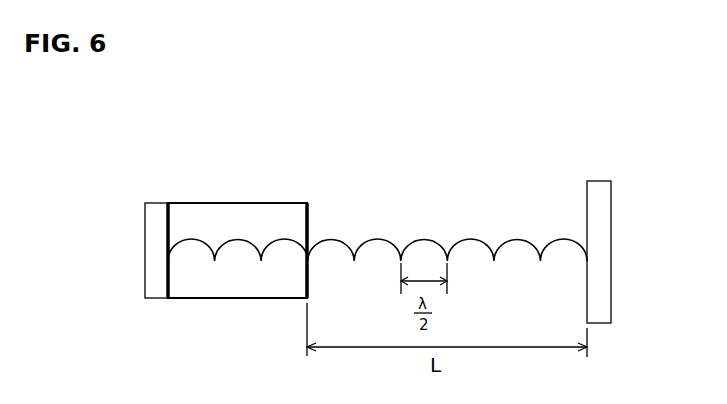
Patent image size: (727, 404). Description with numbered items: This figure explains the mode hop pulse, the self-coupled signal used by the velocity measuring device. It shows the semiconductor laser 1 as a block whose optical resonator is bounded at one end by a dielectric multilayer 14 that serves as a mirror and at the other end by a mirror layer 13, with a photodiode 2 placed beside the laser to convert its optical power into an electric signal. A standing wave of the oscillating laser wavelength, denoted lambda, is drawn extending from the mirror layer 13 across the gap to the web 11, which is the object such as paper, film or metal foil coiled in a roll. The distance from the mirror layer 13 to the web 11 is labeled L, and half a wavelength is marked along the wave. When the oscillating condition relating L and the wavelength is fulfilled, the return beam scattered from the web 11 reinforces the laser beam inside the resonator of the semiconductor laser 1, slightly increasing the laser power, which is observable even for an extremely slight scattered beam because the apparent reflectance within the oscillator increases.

The semiconductor laser 1 is at (183, 203).
The photodiode 2 is at (145, 243).
The web 11 is at (598, 179).
The mirror layer 13 is at (310, 218).
The dielectric multilayer 14 is at (167, 203).